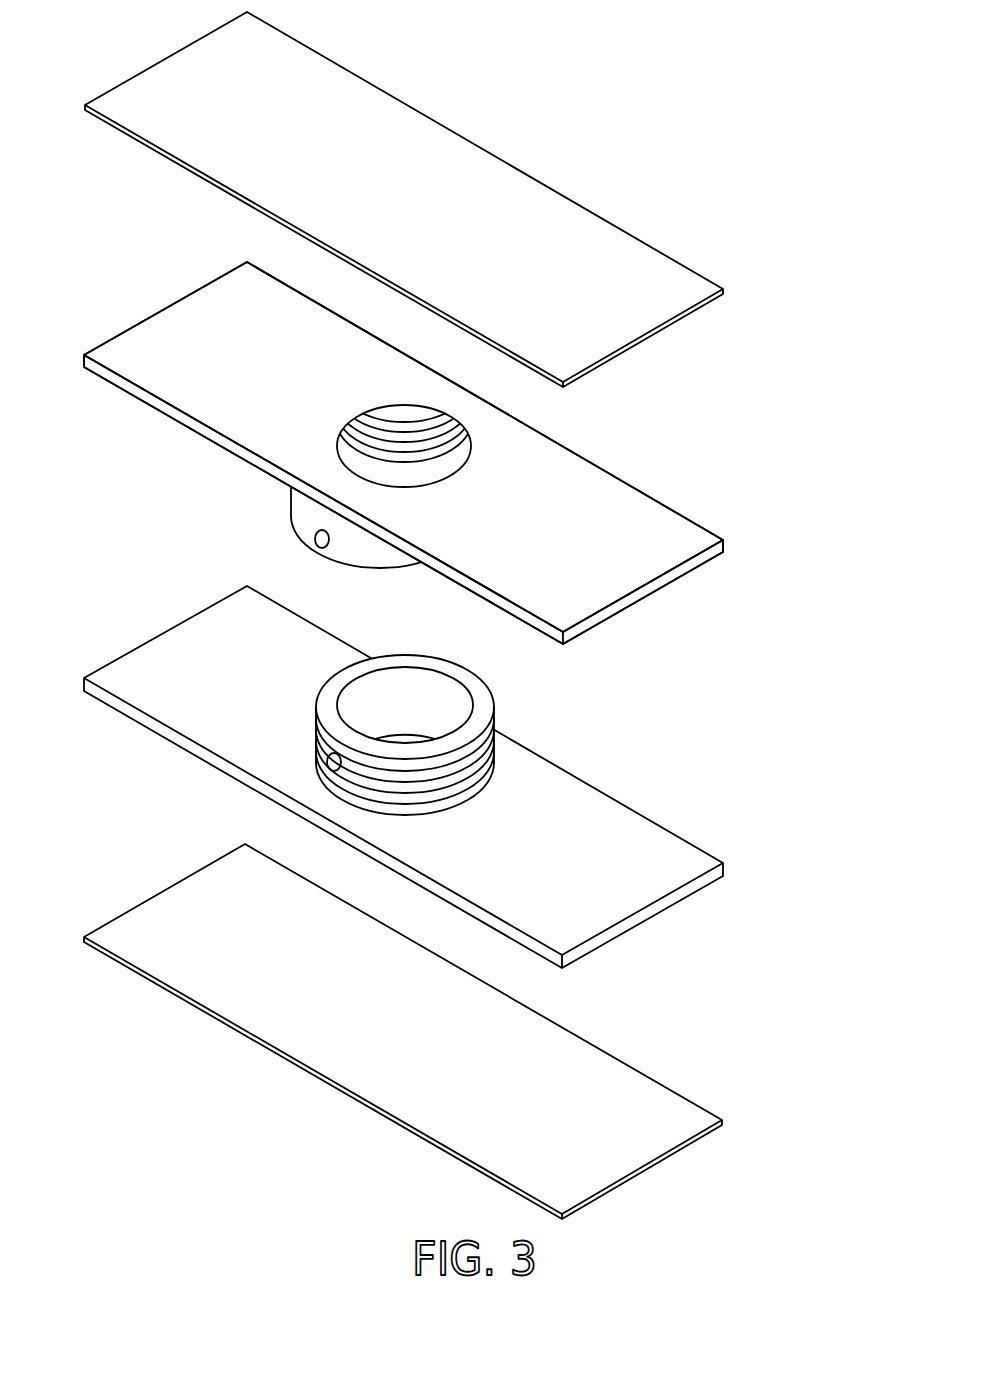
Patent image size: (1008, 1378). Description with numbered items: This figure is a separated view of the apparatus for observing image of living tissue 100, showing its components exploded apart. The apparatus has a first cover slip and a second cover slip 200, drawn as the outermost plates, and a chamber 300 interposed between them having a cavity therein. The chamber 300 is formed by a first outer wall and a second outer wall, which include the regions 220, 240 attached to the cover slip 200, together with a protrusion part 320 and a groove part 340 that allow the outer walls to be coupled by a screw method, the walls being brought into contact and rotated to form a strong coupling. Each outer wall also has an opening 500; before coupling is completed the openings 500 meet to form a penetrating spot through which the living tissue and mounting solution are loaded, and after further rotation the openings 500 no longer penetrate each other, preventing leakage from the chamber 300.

The apparatus for observing image of living tissue 100 is at (628, 65).
The cover slip 200 is at (125, 100).
The region attached to the cover slip 240 is at (128, 347).
The region attached to the cover slip 220 is at (130, 665).
The chamber 300 is at (467, 615).
The groove part 340 is at (431, 453).
The protrusion part 320 is at (489, 703).
The opening 500 is at (327, 757).